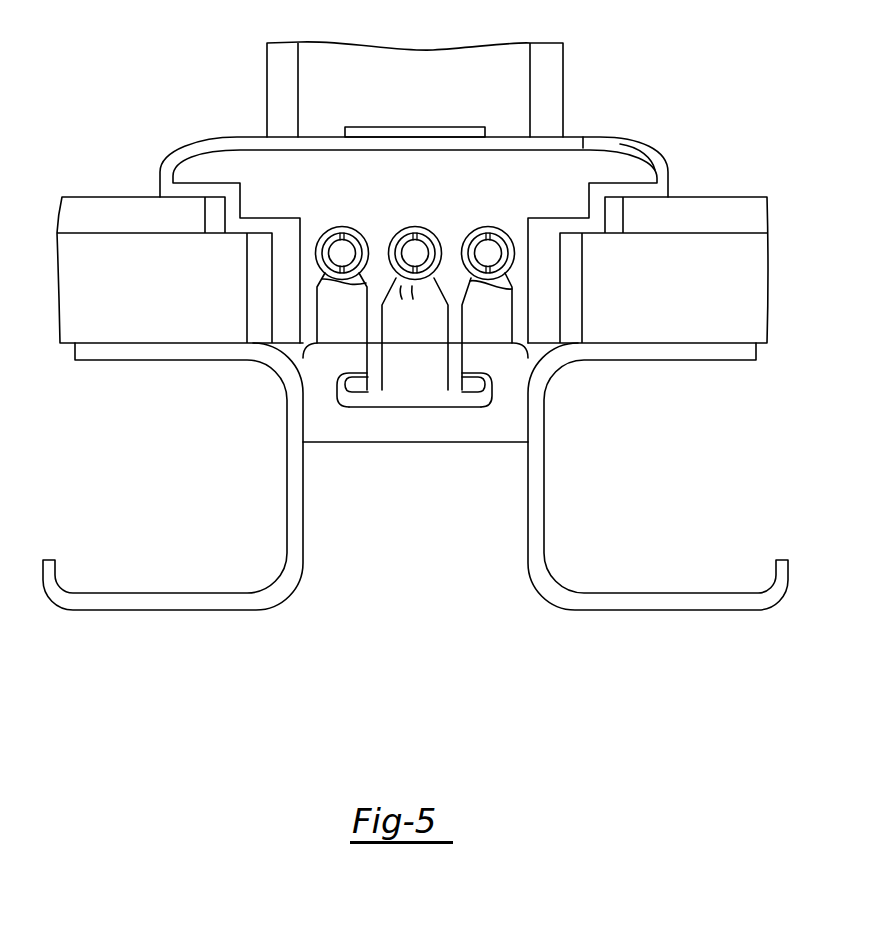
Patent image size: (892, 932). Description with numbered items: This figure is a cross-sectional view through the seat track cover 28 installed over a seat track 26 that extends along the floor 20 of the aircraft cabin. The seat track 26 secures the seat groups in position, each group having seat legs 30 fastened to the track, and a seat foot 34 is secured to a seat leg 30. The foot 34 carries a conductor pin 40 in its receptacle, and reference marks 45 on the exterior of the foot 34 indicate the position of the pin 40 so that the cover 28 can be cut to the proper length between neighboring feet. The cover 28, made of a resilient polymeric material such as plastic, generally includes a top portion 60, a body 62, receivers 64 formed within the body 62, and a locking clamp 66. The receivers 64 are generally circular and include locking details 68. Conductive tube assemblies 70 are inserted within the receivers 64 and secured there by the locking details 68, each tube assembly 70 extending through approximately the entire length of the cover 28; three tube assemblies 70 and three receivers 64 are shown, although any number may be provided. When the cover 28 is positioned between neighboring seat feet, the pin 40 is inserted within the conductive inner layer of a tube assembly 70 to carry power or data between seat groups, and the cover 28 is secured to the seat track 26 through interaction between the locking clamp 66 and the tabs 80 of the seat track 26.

The floor 20 is at (752, 303).
The seat track 26 is at (278, 480).
The seat track cover 28 is at (184, 158).
The seat leg 30 is at (318, 52).
The seat foot 34 is at (235, 128).
The conductor pin 40 is at (346, 248).
The reference marks 45 is at (373, 127).
The top portion 60 is at (585, 136).
The body 62 is at (606, 166).
The receivers 64 is at (317, 327).
The locking clamp 66 is at (372, 390).
The locking details 68 is at (322, 279).
The tube assembly 70 is at (336, 228).
The tabs 80 is at (345, 373).